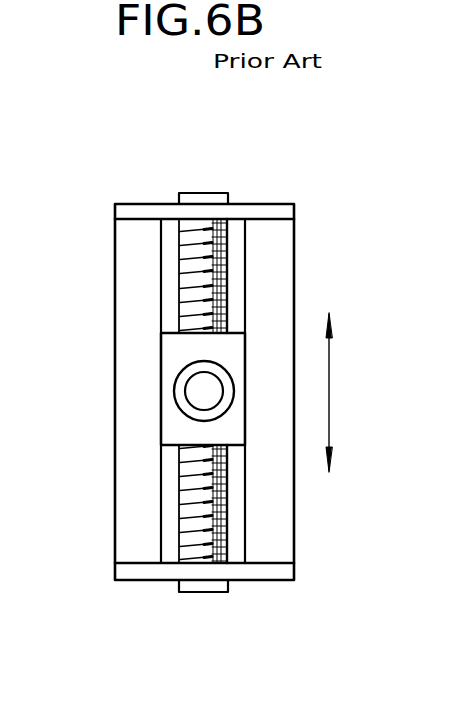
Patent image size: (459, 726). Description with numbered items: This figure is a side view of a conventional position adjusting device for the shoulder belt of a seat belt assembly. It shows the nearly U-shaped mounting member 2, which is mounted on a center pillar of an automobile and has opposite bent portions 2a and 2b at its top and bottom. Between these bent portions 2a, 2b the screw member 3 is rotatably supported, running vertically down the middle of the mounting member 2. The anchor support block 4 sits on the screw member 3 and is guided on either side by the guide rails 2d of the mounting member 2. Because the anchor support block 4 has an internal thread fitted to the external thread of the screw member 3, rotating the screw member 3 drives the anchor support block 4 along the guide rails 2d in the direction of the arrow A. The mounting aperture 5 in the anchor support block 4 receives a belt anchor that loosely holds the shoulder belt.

The mounting member 2 is at (283, 533).
The bent portion 2a is at (261, 212).
The bent portion 2b is at (152, 572).
The guide rails 2d is at (128, 290).
The screw member 3 is at (228, 312).
The anchor support block 4 is at (167, 434).
The mounting aperture 5 is at (195, 385).
The arrow A is at (340, 392).